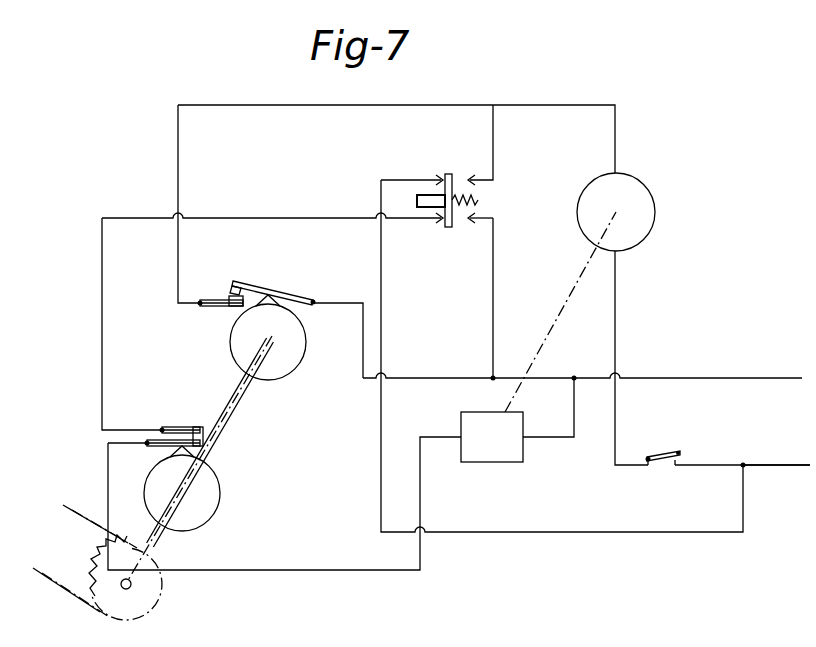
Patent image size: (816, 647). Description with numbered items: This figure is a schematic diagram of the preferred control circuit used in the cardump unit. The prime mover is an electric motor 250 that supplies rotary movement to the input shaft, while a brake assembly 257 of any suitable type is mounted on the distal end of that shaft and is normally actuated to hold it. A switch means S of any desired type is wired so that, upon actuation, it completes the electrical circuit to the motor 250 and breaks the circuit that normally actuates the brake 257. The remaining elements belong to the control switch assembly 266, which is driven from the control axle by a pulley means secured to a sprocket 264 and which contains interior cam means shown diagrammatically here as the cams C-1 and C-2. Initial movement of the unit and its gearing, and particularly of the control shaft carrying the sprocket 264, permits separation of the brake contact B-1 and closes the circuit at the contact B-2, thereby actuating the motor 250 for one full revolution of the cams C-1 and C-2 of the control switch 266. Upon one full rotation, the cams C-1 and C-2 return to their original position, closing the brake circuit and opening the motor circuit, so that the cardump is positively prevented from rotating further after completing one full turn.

The electric motor 250 is at (658, 229).
The switch means S is at (448, 235).
The brake assembly 257 is at (498, 466).
The motor contact B-2 is at (258, 273).
The cam C-2 is at (300, 376).
The control switch assembly 266 is at (247, 417).
The brake contact B-1 is at (210, 439).
The cam C-1 is at (228, 510).
The sprocket 264 is at (140, 598).